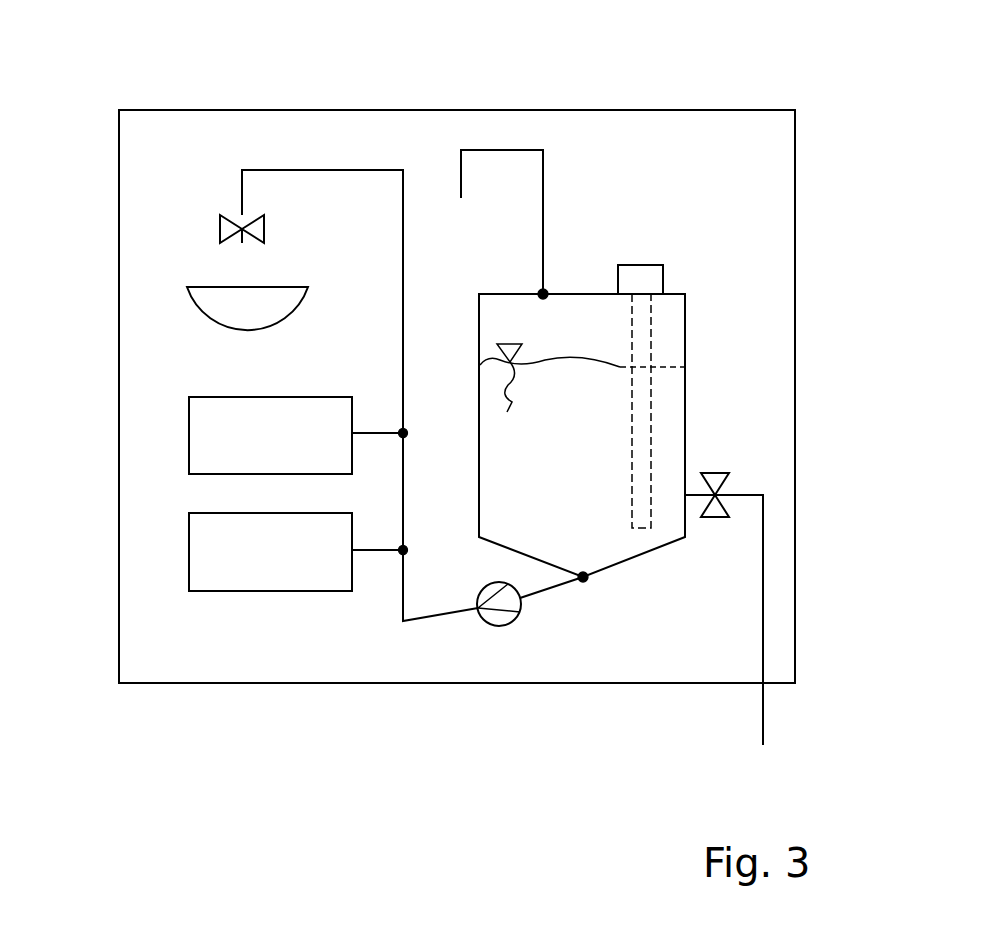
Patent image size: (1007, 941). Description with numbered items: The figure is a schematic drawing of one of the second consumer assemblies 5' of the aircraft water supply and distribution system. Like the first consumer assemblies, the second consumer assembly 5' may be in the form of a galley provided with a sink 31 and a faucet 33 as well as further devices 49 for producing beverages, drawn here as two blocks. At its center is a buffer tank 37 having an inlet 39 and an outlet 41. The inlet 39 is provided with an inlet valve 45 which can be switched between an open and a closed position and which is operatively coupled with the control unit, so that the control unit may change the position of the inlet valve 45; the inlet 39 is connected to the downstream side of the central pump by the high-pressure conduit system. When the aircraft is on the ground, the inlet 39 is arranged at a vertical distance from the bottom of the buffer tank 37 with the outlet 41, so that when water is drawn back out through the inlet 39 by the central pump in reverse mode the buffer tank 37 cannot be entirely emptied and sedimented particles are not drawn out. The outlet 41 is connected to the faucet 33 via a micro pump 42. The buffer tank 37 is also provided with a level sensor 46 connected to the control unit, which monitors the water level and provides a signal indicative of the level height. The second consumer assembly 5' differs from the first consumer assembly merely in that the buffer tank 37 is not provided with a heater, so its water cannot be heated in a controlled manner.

The second consumer assembly 5' is at (458, 350).
The faucet 33 is at (220, 228).
The sink 31 is at (247, 308).
The further devices 49 is at (298, 494).
The buffer tank 37 is at (582, 435).
The level sensor 46 is at (636, 280).
The inlet 39 is at (688, 490).
The inlet valve 45 is at (718, 477).
The micro pump 42 is at (500, 626).
The outlet 41 is at (585, 582).